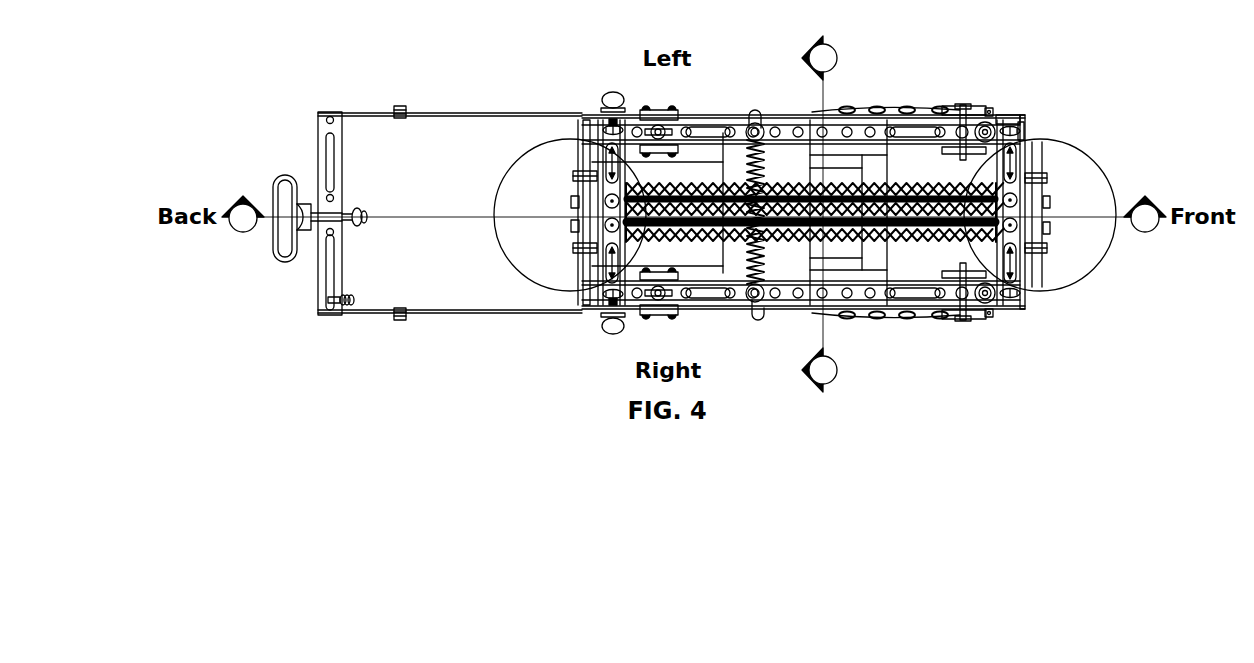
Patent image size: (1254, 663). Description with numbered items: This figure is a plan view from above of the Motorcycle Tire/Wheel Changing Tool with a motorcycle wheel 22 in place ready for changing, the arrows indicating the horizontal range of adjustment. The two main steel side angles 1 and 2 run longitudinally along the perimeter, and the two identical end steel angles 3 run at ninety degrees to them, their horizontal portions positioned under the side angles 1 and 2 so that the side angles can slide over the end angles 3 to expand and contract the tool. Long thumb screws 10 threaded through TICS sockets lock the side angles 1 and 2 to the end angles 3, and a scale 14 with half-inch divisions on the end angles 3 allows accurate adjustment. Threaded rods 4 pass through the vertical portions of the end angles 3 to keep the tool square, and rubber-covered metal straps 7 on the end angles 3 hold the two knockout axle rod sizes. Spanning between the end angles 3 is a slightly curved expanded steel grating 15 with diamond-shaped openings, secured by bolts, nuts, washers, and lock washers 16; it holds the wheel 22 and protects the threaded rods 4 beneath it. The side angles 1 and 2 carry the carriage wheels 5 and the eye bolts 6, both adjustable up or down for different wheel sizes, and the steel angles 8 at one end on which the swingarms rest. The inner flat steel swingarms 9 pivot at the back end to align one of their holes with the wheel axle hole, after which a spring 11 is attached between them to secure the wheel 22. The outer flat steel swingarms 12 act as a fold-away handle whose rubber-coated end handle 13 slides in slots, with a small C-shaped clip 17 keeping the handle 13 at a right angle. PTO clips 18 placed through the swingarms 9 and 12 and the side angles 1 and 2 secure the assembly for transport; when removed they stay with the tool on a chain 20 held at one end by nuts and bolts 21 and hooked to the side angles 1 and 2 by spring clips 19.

The steel side angle (right side) 1 is at (1012, 310).
The steel side angle (left side) 2 is at (1010, 118).
The end steel angle 3 is at (590, 134).
The threaded rod 4 is at (640, 202).
The carriage wheel 5 is at (665, 112).
The eye bolt 6 is at (707, 125).
The metal strap with rubber covering 7 is at (575, 175).
The steel angle 8 is at (990, 112).
The inner flat steel swingarm 9 is at (620, 99).
The long thumb screw 10 is at (605, 124).
The spring 11 is at (768, 318).
The outer flat steel swingarm 12 is at (428, 113).
The end handle 13 is at (366, 222).
The scale 14 is at (627, 178).
The expanded steel grating 15 is at (680, 195).
The bolts, nuts, washers, and lock washers 16 is at (605, 200).
The C-shaped clip 17 is at (353, 298).
The PTO clip 18 is at (965, 110).
The spring clip 19 is at (962, 105).
The chain 20 is at (845, 110).
The nuts and bolts 21 is at (762, 125).
The motorcycle tire/wheel 22 is at (520, 178).